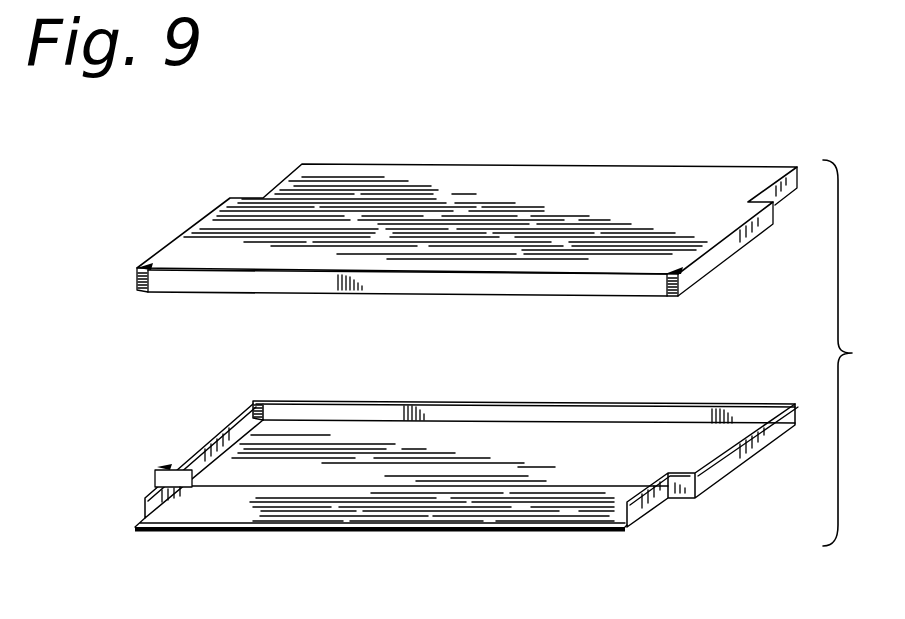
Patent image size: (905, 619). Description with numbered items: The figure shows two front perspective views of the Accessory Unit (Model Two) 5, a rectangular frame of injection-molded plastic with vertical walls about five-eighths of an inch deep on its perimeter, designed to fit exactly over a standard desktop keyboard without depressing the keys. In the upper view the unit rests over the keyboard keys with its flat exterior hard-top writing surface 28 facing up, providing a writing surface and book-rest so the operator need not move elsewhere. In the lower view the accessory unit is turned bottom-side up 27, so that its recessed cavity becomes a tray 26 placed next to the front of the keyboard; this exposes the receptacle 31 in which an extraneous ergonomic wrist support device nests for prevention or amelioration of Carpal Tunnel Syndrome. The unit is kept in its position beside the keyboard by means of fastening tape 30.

The Accessory Unit (Model 2) 5 is at (182, 222).
The tray 26 is at (226, 522).
The accessory unit turned bottom-side up 27 is at (550, 419).
The hard-top writing surface 28 is at (524, 196).
The fastening tape 30 is at (677, 297).
The receptacle 31 is at (363, 428).